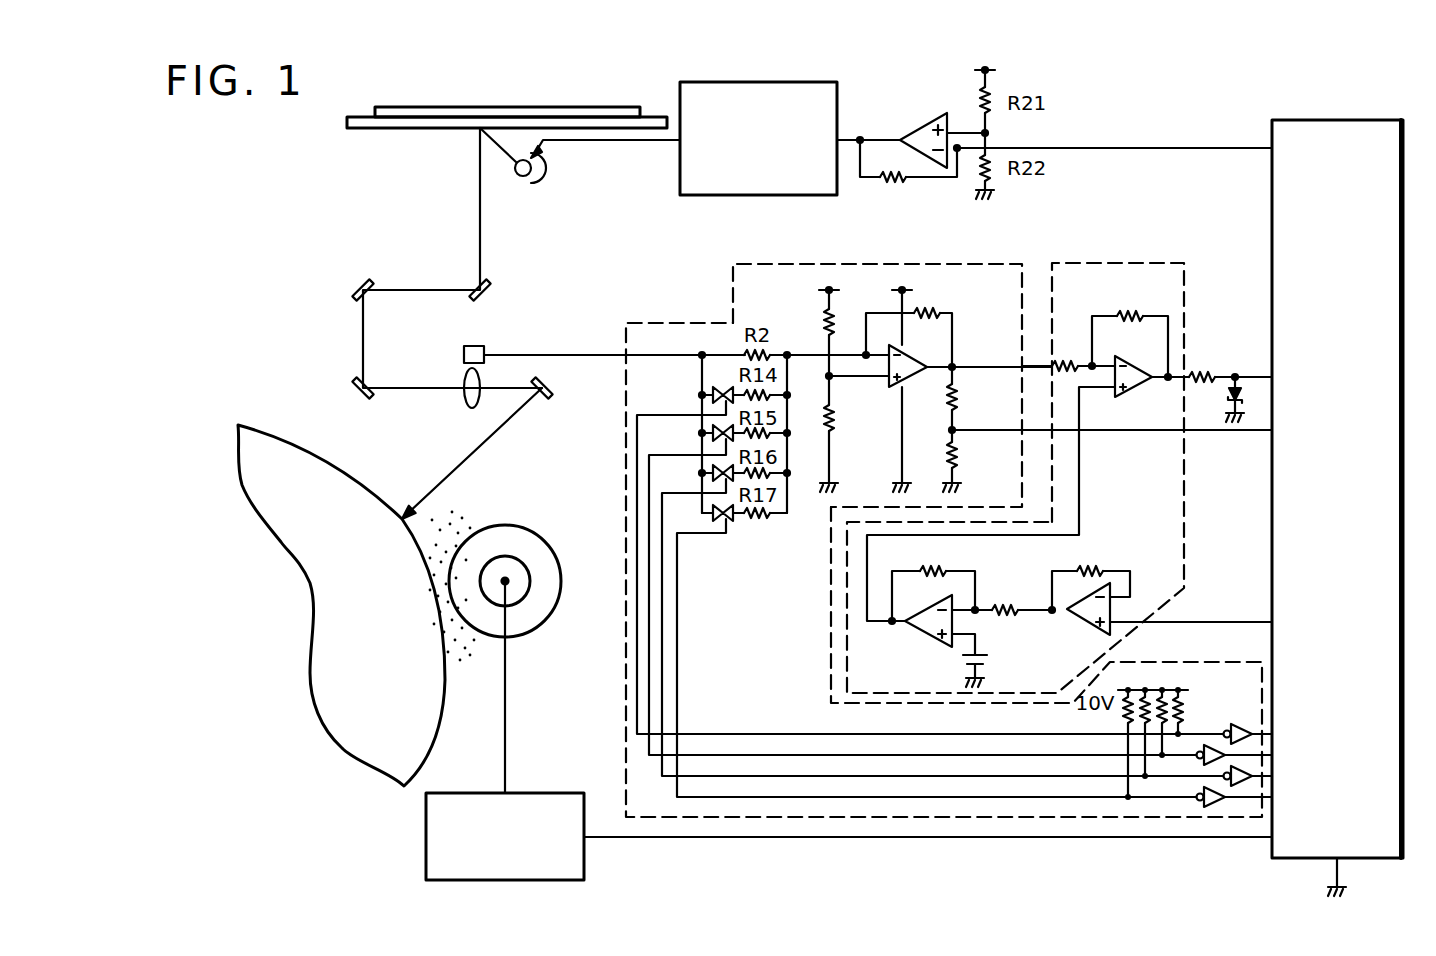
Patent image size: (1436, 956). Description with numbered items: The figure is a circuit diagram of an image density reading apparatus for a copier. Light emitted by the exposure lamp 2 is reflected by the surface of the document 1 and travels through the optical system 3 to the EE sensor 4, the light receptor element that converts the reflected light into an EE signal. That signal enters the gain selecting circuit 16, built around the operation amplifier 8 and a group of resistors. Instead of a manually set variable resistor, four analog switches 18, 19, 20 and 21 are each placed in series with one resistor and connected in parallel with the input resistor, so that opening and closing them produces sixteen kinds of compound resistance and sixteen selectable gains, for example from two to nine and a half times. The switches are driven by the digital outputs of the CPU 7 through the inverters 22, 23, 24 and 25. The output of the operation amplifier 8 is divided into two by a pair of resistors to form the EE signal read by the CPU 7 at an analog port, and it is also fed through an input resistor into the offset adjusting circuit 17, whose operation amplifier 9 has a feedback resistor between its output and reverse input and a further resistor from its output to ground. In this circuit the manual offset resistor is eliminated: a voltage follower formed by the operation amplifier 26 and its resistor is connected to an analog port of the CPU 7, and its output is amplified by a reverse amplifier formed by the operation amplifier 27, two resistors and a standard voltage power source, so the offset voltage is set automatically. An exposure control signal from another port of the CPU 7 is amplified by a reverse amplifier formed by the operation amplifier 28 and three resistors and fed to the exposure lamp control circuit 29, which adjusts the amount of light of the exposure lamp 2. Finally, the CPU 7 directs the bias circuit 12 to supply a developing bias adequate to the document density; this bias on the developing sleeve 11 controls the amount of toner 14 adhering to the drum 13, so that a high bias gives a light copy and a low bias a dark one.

The document 1 is at (570, 107).
The exposure lamp 2 is at (522, 177).
The optical system 3 is at (470, 408).
The EE sensor 4 is at (478, 346).
The CPU 7 is at (1335, 120).
The operation amplifier 8 is at (895, 385).
The operation amplifier 9 is at (1130, 390).
The developing sleeve 11 is at (505, 526).
The bias circuit 12 is at (524, 793).
The drum 13 is at (240, 485).
The toner 14 is at (466, 647).
The gain selecting circuit 16 is at (880, 264).
The offset adjusting circuit 17 is at (1088, 263).
The analog switch 18 is at (718, 390).
The analog switch 19 is at (718, 430).
The analog switch 20 is at (718, 470).
The analog switch 21 is at (730, 521).
The inverter 22 is at (1233, 724).
The inverter 23 is at (1212, 747).
The inverter 24 is at (1240, 787).
The inverter 25 is at (1212, 808).
The operation amplifier 26 is at (1092, 624).
The operation amplifier 27 is at (930, 635).
The operation amplifier 28 is at (925, 117).
The exposure lamp control circuit 29 is at (806, 82).